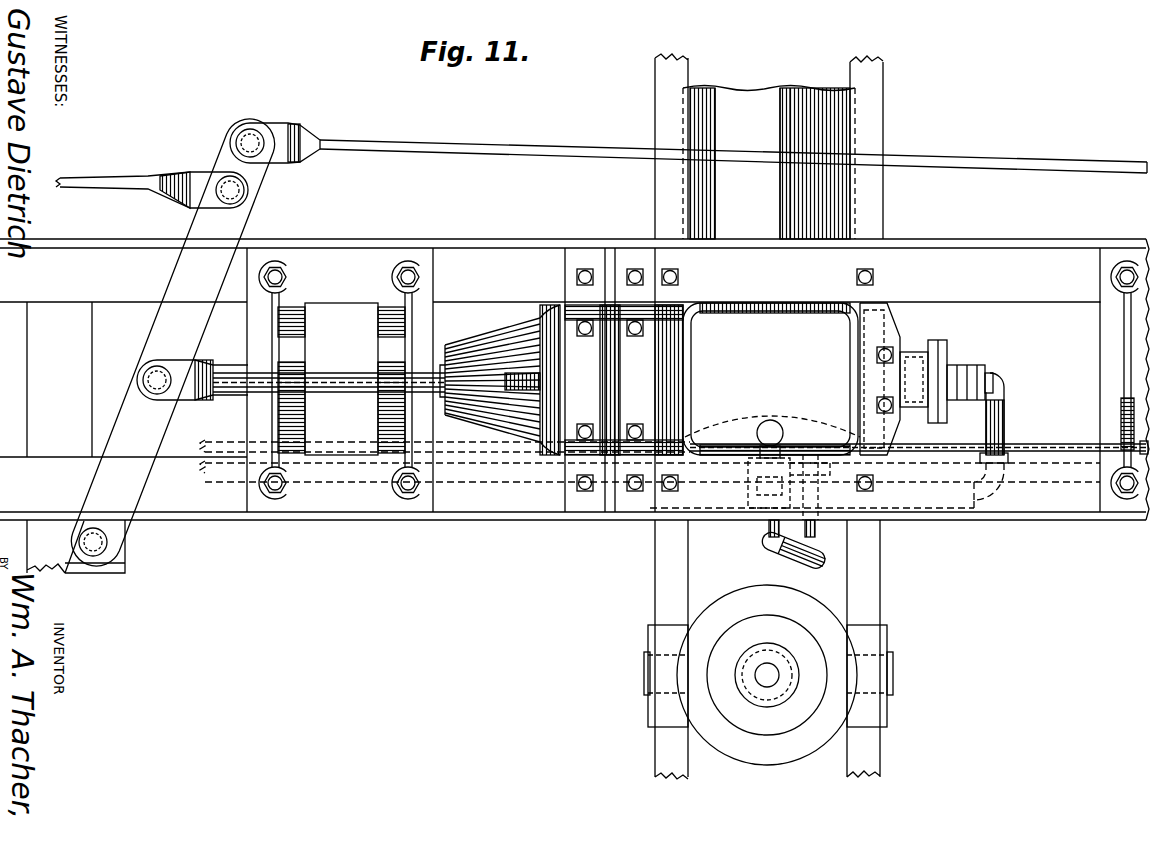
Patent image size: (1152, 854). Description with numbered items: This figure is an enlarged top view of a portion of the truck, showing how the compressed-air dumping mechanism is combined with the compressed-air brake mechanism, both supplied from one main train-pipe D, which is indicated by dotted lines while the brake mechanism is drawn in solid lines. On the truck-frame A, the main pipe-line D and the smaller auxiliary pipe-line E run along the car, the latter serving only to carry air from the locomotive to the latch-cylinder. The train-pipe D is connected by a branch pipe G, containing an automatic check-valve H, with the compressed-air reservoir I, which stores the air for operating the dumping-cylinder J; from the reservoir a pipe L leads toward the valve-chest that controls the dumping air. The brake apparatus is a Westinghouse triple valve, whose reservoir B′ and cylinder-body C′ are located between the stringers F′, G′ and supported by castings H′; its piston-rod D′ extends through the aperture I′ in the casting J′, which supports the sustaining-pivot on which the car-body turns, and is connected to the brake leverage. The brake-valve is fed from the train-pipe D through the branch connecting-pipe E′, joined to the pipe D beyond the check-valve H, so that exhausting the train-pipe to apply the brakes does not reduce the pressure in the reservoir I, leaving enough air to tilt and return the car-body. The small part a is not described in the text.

The truck-frame A is at (574, 394).
The compressed-air reservoir I is at (769, 146).
The aperture I′ is at (268, 400).
The piston-rod D′ is at (328, 380).
The casting J′ is at (302, 428).
The castings H′ is at (628, 517).
The cylinder-body C′ is at (608, 388).
The reservoir of the triple valve B′ is at (791, 379).
The branch pipe G is at (757, 425).
The automatic check-valve H is at (786, 418).
The pipe L is at (765, 542).
The pin a is at (819, 535).
The branch connecting-pipe E′ is at (1004, 410).
The auxiliary pipe-line E is at (1058, 448).
The main pipe-line D is at (1050, 475).
The stringer G′ is at (1016, 519).
The stringer F′ is at (1025, 284).
The dumping-cylinder J is at (768, 649).